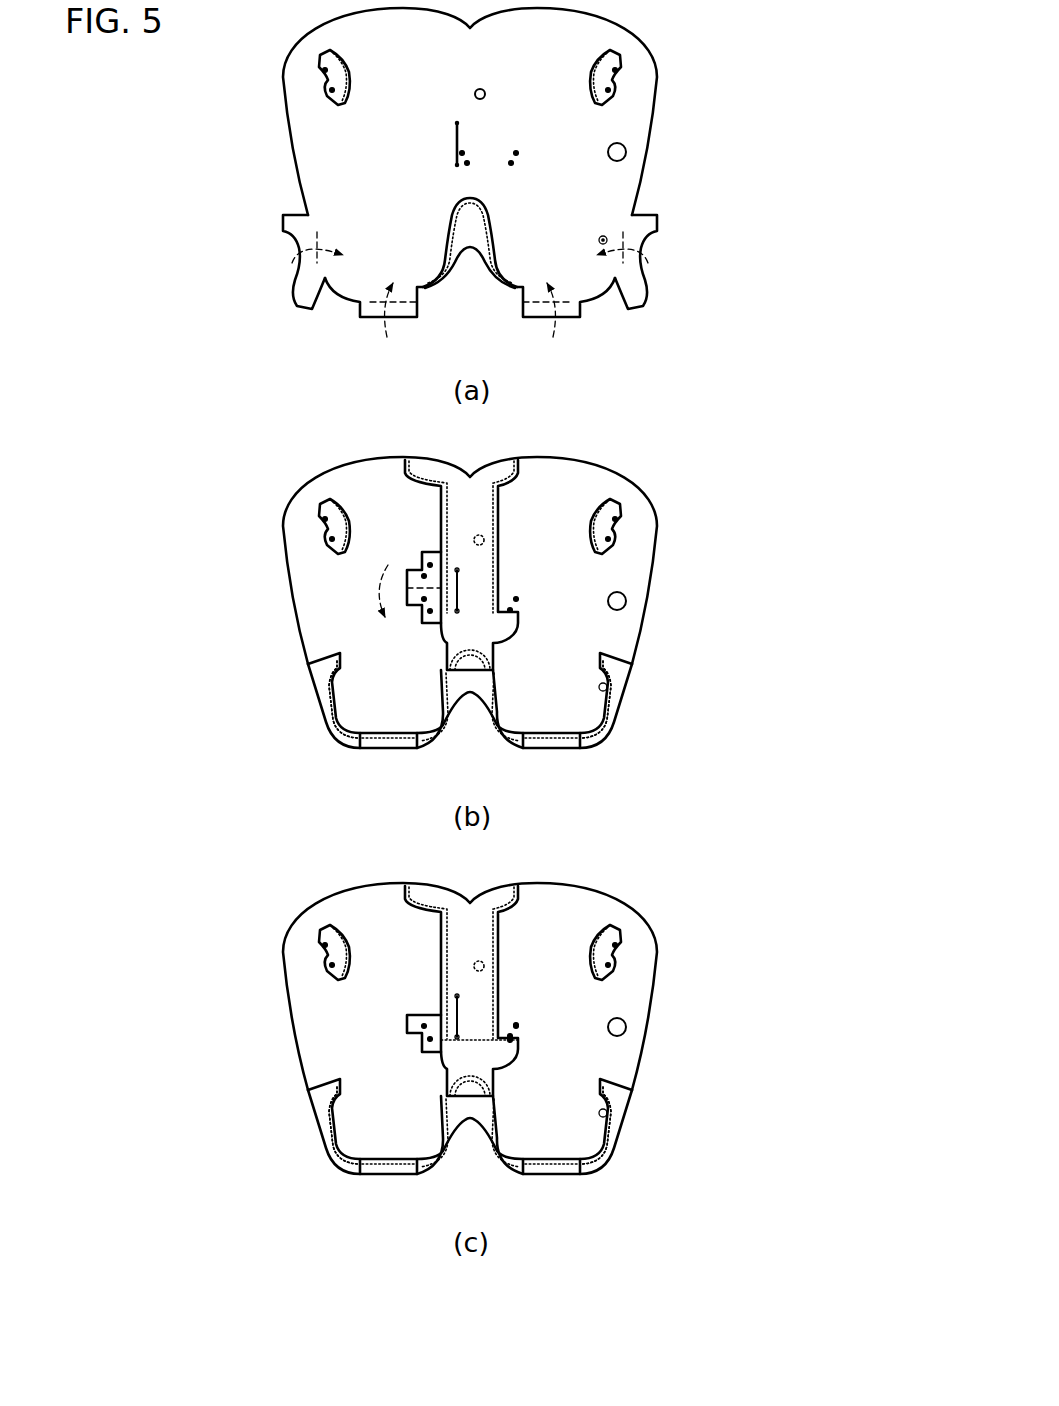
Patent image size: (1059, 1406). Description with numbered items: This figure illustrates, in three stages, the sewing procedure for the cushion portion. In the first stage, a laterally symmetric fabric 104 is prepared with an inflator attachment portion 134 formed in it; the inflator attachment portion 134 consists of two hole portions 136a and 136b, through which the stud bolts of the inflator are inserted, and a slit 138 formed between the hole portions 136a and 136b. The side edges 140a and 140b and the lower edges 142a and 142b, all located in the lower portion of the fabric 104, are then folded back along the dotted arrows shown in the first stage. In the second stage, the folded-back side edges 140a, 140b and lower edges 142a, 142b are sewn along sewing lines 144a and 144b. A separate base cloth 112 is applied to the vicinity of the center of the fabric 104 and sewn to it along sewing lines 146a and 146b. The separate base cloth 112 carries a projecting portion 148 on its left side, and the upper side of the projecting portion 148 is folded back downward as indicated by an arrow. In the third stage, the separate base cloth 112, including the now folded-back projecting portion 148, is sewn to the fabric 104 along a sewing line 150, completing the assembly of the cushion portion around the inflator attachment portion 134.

The fabric 104 is at (665, 47).
The separate base cloth 112 is at (485, 510).
The inflator attachment portion 134 is at (472, 132).
The hole portion 136a is at (457, 123).
The hole portion 136b is at (457, 165).
The slit 138 is at (457, 143).
The side edge 140a is at (310, 281).
The side edge 140b is at (638, 293).
The lower edge 142a is at (373, 313).
The lower edge 142b is at (572, 313).
The sewing line 144a is at (367, 706).
The sewing line 144b is at (600, 716).
The sewing line 146a is at (443, 506).
The sewing line 146b is at (497, 563).
The projecting portion 148 is at (415, 605).
The sewing line 150 is at (485, 1047).